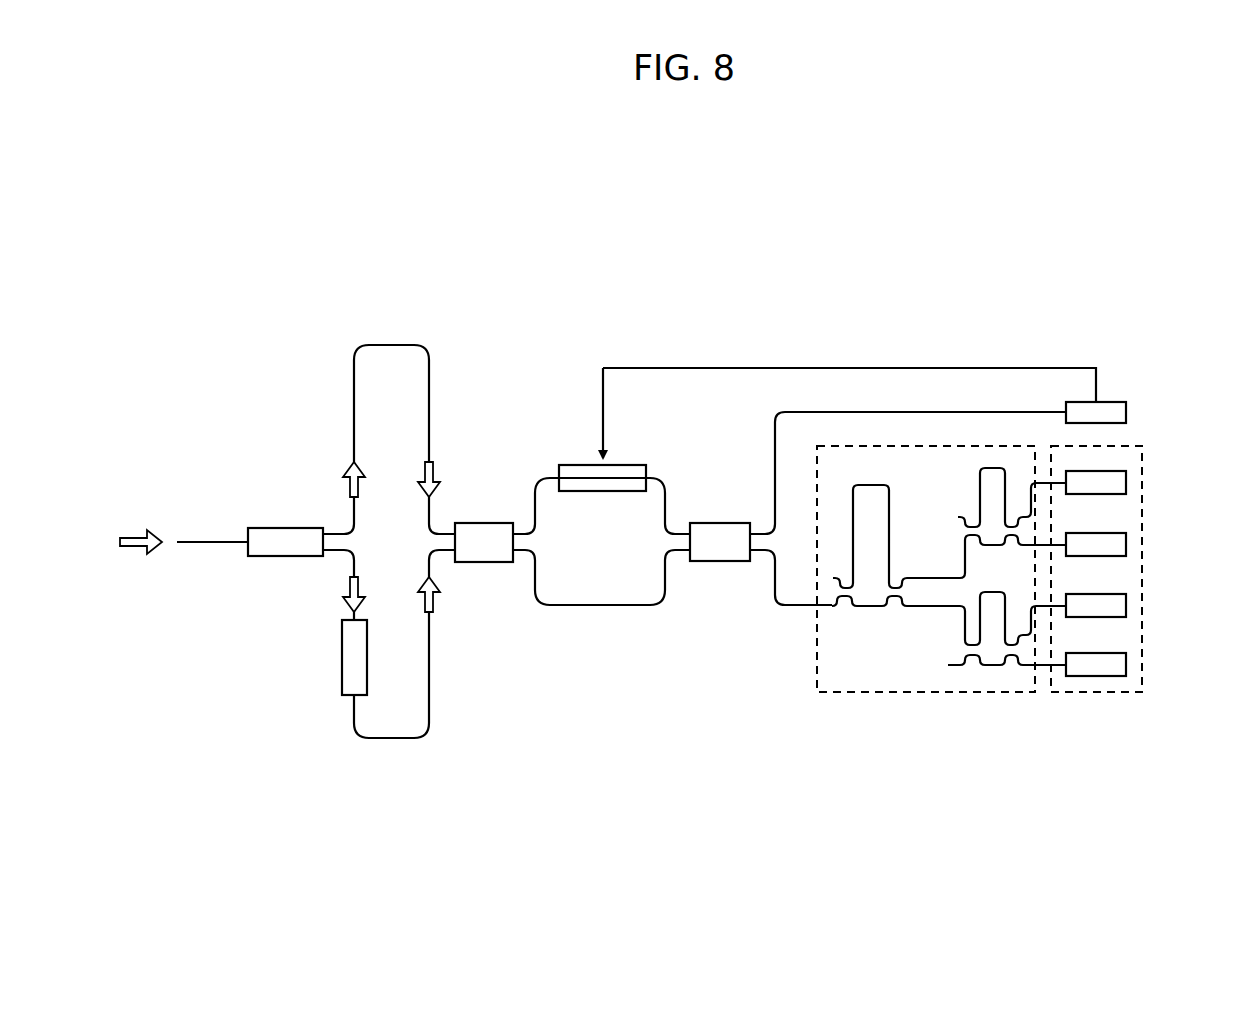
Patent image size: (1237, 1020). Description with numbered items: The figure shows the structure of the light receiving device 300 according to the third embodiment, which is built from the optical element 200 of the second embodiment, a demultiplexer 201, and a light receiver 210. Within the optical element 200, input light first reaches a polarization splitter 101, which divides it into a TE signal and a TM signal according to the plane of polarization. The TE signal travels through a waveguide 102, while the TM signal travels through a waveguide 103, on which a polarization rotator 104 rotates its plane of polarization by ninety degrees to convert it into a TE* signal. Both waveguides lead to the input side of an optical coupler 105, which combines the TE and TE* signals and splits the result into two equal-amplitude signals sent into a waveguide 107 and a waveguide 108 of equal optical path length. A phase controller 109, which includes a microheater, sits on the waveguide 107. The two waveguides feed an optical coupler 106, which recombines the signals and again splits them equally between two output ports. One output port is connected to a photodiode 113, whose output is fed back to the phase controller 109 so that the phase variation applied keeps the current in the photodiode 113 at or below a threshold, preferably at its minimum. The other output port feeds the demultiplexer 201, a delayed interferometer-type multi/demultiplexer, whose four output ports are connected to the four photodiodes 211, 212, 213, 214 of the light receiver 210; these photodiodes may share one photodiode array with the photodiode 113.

The polarization splitter 101 is at (289, 527).
The waveguide 102 is at (393, 344).
The waveguide 103 is at (430, 683).
The polarization rotator 104 is at (340, 656).
The optical coupler 105 is at (488, 522).
The optical coupler 106 is at (726, 521).
The waveguide 107 is at (667, 481).
The waveguide 108 is at (597, 607).
The phase controller 109 is at (577, 462).
The photodiode 113 is at (1112, 400).
The optical element 200 is at (735, 338).
The demultiplexer 201 is at (918, 695).
The light receiver 210 is at (1133, 598).
The photodiode 211 is at (1126, 483).
The photodiode 212 is at (1126, 545).
The photodiode 213 is at (1126, 606).
The photodiode 214 is at (1126, 665).
The light receiving device 300 is at (1165, 280).